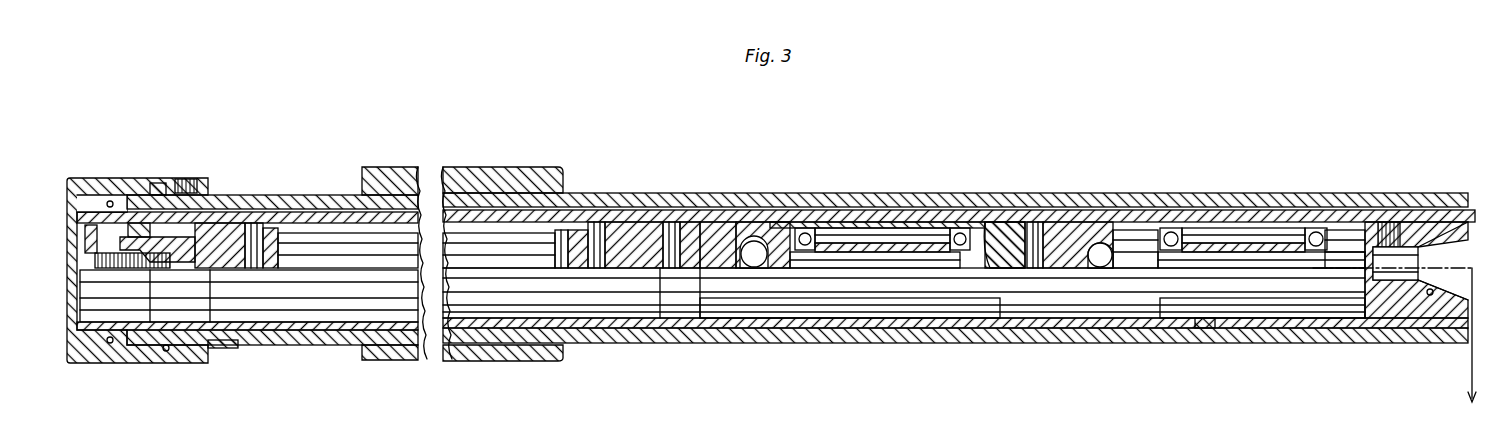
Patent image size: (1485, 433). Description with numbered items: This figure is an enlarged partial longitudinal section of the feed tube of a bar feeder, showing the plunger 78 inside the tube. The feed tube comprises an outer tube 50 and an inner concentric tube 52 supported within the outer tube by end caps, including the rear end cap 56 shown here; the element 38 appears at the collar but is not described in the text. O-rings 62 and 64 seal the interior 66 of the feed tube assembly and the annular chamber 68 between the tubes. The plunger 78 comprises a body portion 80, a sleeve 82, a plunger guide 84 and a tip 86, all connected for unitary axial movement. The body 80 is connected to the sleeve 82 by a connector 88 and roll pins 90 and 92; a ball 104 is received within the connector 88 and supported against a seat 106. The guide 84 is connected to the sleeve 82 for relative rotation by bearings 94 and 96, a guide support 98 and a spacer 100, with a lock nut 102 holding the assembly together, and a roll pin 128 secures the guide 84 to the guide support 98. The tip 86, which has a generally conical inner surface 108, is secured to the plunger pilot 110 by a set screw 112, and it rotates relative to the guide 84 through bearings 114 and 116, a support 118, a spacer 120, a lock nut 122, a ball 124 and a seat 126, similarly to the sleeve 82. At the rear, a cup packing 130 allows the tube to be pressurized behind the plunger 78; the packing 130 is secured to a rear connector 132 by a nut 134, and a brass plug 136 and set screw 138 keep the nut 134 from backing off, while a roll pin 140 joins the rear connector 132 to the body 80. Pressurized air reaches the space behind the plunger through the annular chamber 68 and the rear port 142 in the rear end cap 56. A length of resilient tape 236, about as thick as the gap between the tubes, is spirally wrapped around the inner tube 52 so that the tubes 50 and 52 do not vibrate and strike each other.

The collar 38 is at (490, 170).
The outer tube 50 is at (1085, 195).
The inner concentric tube 52 is at (1090, 330).
The rear end cap 56 is at (105, 192).
The O-ring 62 is at (158, 183).
The O-ring 64 is at (108, 364).
The interior 66 is at (137, 223).
The annular chamber 68 is at (322, 210).
The plunger 78 is at (602, 300).
The body portion 80 is at (500, 318).
The sleeve 82 is at (820, 310).
The plunger guide 84 is at (1285, 310).
The tip 86 is at (1425, 215).
The connector 88 is at (630, 228).
The roll pin 90 is at (592, 222).
The roll pin 92 is at (668, 228).
The bearing 94 is at (806, 234).
The bearing 96 is at (950, 238).
The guide support 98 is at (890, 262).
The spacer 100 is at (875, 242).
The lock nut 102 is at (782, 262).
The ball 104 is at (740, 264).
The seat 106 is at (708, 268).
The conical inner surface 108 is at (1422, 306).
The plunger pilot 110 is at (1422, 255).
The set screw 112 is at (1389, 222).
The bearing 114 is at (1312, 235).
The bearing 116 is at (1170, 232).
The support 118 is at (1240, 262).
The spacer 120 is at (1250, 240).
The lock nut 122 is at (1153, 262).
The ball 124 is at (1100, 264).
The seat 126 is at (1075, 262).
The roll pin 128 is at (1033, 225).
The cup packing 130 is at (205, 225).
The rear connector 132 is at (235, 268).
The nut 134 is at (188, 268).
The brass plug 136 is at (157, 248).
The set screw 138 is at (113, 265).
The roll pin 140 is at (252, 225).
The rear port 142 is at (84, 208).
The resilient tape 236 is at (380, 170).